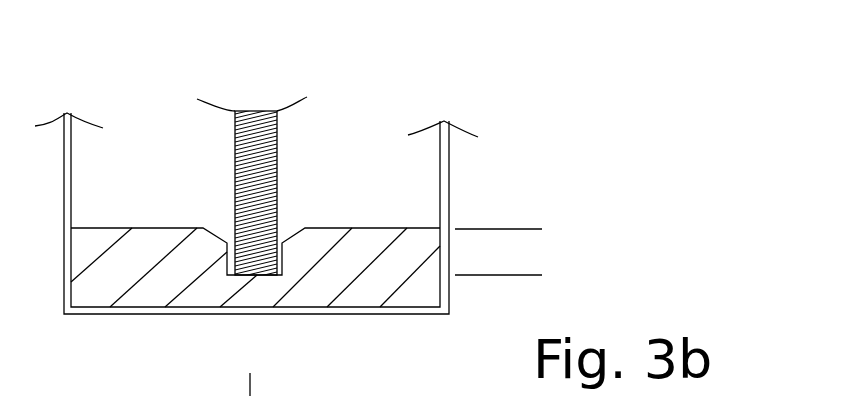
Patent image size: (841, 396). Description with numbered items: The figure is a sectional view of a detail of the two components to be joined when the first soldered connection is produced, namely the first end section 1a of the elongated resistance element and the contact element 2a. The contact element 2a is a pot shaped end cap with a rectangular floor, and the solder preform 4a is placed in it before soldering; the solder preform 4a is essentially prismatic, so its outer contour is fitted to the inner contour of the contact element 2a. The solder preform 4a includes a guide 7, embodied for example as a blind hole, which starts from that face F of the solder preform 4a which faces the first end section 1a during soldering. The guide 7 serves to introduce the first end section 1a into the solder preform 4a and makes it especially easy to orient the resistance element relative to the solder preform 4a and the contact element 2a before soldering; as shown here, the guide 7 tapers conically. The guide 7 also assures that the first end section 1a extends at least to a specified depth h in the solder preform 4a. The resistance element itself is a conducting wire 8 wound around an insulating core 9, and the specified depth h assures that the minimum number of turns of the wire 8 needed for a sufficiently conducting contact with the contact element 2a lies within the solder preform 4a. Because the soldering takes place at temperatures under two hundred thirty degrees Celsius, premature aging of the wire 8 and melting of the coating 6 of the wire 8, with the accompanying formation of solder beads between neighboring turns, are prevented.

The first end section 1a is at (343, 122).
The contact element 2a is at (463, 180).
The solder preform 4a is at (102, 285).
The coating 6 is at (184, 165).
The conducting wire 8 is at (230, 227).
The guide 7 is at (286, 234).
The insulating core 9 is at (270, 167).
The face F is at (175, 218).
The specified depth h is at (471, 229).